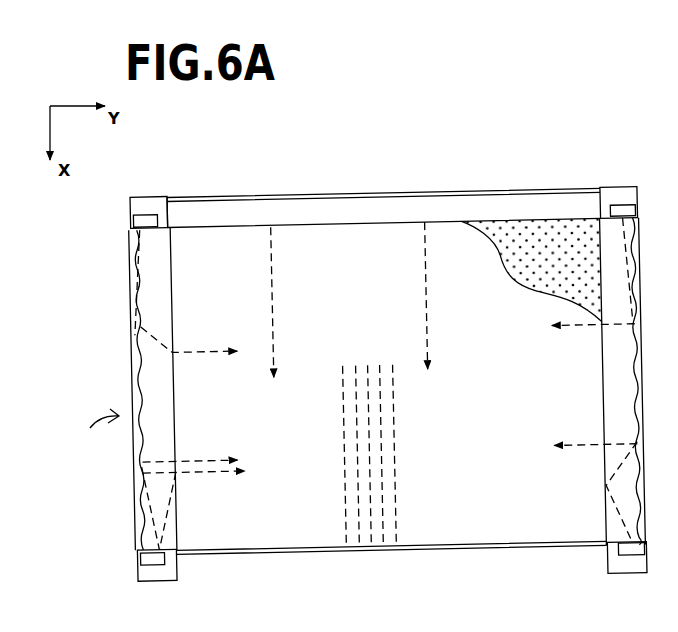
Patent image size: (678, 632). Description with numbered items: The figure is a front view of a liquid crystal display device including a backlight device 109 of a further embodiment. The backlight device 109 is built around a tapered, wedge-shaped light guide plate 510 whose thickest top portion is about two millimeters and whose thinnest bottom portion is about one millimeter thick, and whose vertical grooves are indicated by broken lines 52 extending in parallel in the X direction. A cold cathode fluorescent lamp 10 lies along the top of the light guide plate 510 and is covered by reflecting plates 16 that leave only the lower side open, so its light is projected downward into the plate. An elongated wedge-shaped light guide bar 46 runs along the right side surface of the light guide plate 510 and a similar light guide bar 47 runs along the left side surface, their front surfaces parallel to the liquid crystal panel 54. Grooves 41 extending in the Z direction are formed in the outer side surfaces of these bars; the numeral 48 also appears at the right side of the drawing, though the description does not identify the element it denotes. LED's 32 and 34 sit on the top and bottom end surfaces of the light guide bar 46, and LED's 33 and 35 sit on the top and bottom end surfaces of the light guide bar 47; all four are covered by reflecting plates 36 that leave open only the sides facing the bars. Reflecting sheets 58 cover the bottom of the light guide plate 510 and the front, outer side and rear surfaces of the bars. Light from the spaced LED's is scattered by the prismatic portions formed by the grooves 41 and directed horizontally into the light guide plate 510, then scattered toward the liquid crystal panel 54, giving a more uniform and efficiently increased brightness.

The cold cathode fluorescent lamp 10 is at (462, 207).
The reflecting plates 16 is at (553, 190).
The reflecting plates 36 is at (148, 196).
The LED 33 is at (136, 216).
The LED 32 is at (640, 212).
The LED 34 is at (608, 548).
The LED 35 is at (178, 561).
The liquid crystal panel 54 is at (583, 278).
The reflecting sheet 58 is at (130, 333).
The backlight device 109 is at (97, 433).
The grooves 41 is at (138, 474).
The light guide bar 47 is at (137, 533).
The right side strip 48 is at (645, 388).
The light guide bar 46 is at (625, 503).
The broken lines 52 is at (390, 535).
The light guide plate 510 is at (330, 546).